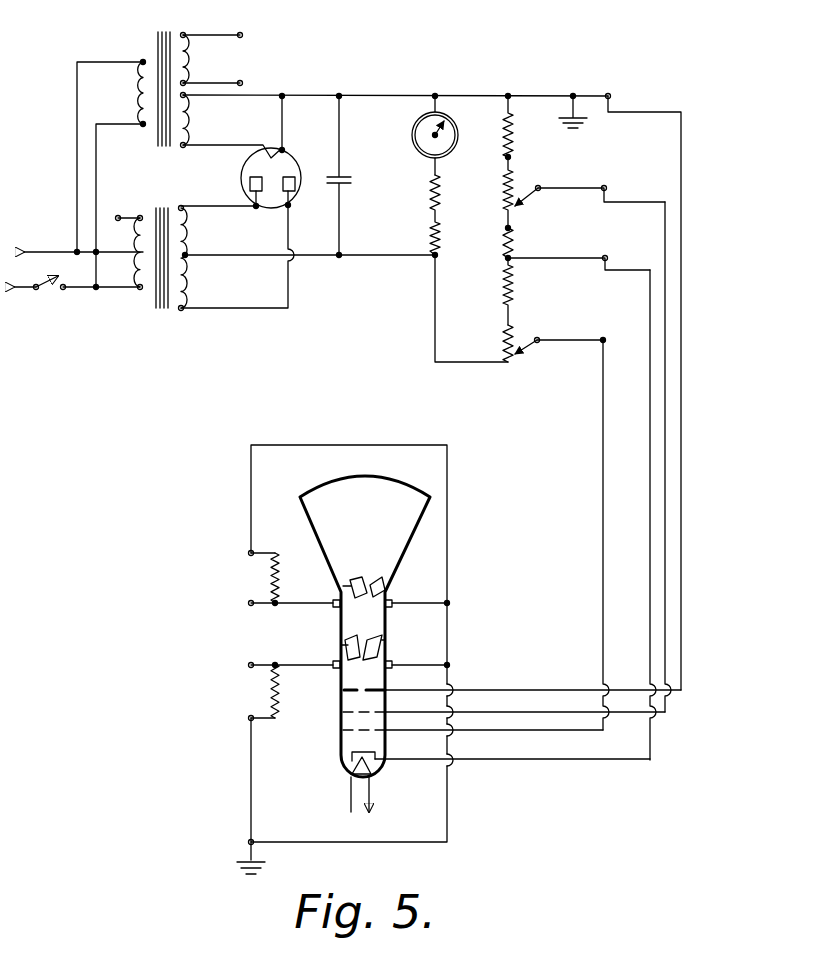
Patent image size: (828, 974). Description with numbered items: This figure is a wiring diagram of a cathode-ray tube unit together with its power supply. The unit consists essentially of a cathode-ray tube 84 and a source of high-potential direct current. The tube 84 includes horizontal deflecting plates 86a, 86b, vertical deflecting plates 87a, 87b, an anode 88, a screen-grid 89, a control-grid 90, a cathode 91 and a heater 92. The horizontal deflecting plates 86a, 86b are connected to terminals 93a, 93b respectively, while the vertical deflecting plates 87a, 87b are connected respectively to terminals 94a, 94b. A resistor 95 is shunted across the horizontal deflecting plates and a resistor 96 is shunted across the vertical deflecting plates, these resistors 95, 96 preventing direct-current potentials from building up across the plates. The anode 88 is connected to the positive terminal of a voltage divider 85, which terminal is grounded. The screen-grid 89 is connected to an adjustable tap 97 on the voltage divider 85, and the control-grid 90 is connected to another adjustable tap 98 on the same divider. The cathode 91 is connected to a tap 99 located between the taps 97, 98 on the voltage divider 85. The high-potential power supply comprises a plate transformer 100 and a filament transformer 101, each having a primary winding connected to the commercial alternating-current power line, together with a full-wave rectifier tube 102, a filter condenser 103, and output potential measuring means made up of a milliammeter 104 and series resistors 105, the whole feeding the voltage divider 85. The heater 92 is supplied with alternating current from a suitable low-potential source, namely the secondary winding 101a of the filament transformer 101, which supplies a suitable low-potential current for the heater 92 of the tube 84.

The cathode-ray tube 84 is at (365, 644).
The voltage divider 85 is at (496, 178).
The horizontal deflecting plate 86a is at (341, 644).
The horizontal deflecting plate 86b is at (385, 640).
The vertical deflecting plate 87a is at (343, 585).
The vertical deflecting plate 87b is at (385, 585).
The anode 88 is at (383, 690).
The screen-grid 89 is at (345, 712).
The control-grid 90 is at (345, 731).
The cathode 91 is at (370, 752).
The heater 92 is at (372, 767).
The terminal 93a is at (325, 664).
The terminal 93b is at (239, 717).
The terminal 94a is at (325, 602).
The terminal 94b is at (239, 552).
The resistor 95 is at (287, 691).
The resistor 96 is at (287, 578).
The adjustable tap 97 is at (590, 202).
The adjustable tap 98 is at (553, 346).
The tap 99 is at (576, 291).
The plate transformer 100 is at (167, 306).
The filament transformer 101 is at (172, 36).
The secondary winding 101a is at (221, 59).
The full-wave rectifier tube 102 is at (289, 163).
The filter condenser 103 is at (351, 175).
The milliammeter 104 is at (413, 138).
The series resistors 105 is at (430, 240).